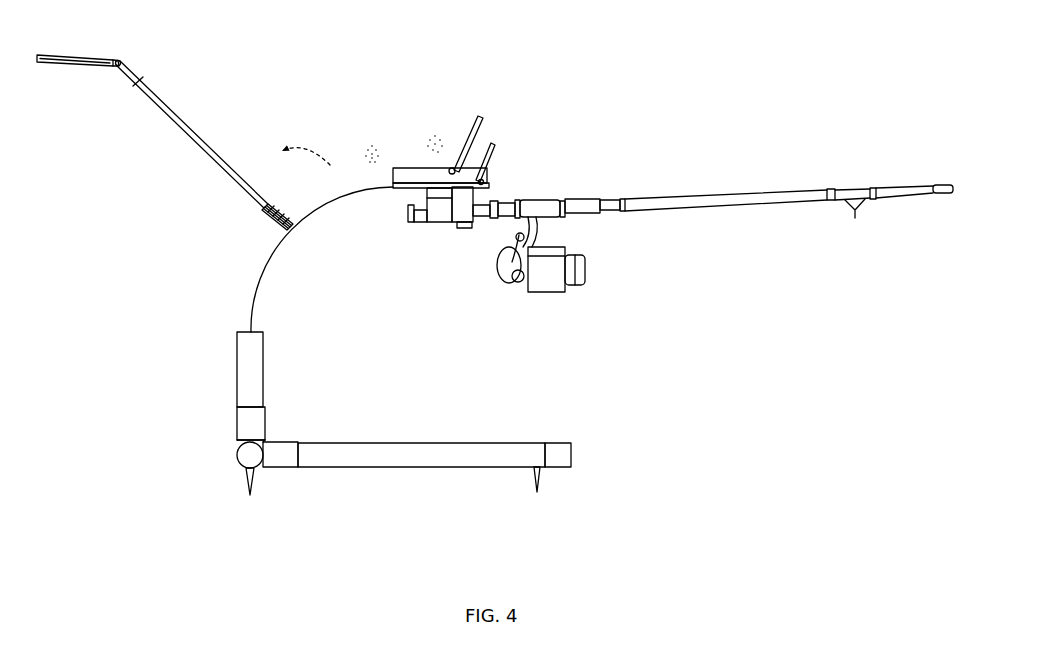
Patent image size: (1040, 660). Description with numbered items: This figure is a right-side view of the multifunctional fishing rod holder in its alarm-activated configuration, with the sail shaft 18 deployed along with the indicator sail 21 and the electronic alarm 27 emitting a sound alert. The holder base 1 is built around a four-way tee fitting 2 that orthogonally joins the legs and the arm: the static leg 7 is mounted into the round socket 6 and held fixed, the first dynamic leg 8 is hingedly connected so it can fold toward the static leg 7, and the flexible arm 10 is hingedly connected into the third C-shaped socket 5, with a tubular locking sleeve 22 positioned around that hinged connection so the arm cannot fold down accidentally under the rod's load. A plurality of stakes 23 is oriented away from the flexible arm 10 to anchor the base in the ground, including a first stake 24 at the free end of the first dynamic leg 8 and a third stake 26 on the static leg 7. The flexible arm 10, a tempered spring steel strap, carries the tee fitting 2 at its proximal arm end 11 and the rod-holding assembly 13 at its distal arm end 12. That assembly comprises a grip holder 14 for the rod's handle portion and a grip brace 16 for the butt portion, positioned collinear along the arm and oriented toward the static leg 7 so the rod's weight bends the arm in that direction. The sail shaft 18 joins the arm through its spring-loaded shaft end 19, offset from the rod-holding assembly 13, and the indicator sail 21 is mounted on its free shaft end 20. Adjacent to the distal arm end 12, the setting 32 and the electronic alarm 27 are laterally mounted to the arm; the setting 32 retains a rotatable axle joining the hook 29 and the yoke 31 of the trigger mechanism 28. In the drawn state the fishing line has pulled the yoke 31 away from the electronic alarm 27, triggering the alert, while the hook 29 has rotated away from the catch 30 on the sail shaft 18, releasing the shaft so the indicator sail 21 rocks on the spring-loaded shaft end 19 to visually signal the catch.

The holder base 1 is at (304, 295).
The 4-way tee fitting 2 is at (364, 421).
The third C-shaped socket 5 is at (266, 440).
The round socket 6 is at (281, 468).
The static leg 7 is at (500, 445).
The first dynamic leg 8 is at (237, 455).
The flexible arm 10 is at (266, 258).
The proximal arm end 11 is at (237, 406).
The distal arm end 12 is at (490, 186).
The rod-holding assembly 13 is at (410, 255).
The grip holder 14 is at (462, 226).
The grip brace 16 is at (407, 212).
The sail shaft 18 is at (208, 137).
The spring-loaded shaft end 19 is at (274, 227).
The free shaft end 20 is at (121, 61).
The indicator sail 21 is at (72, 56).
The locking sleeve 22 is at (236, 425).
The plurality of stakes 23 is at (368, 488).
The first stake 24 is at (250, 482).
The third stake 26 is at (537, 481).
The electronic alarm 27 is at (398, 168).
The trigger mechanism 28 is at (477, 124).
The hook 29 is at (490, 148).
The catch 30 is at (132, 89).
The yoke 31 is at (481, 114).
The setting 32 is at (486, 180).